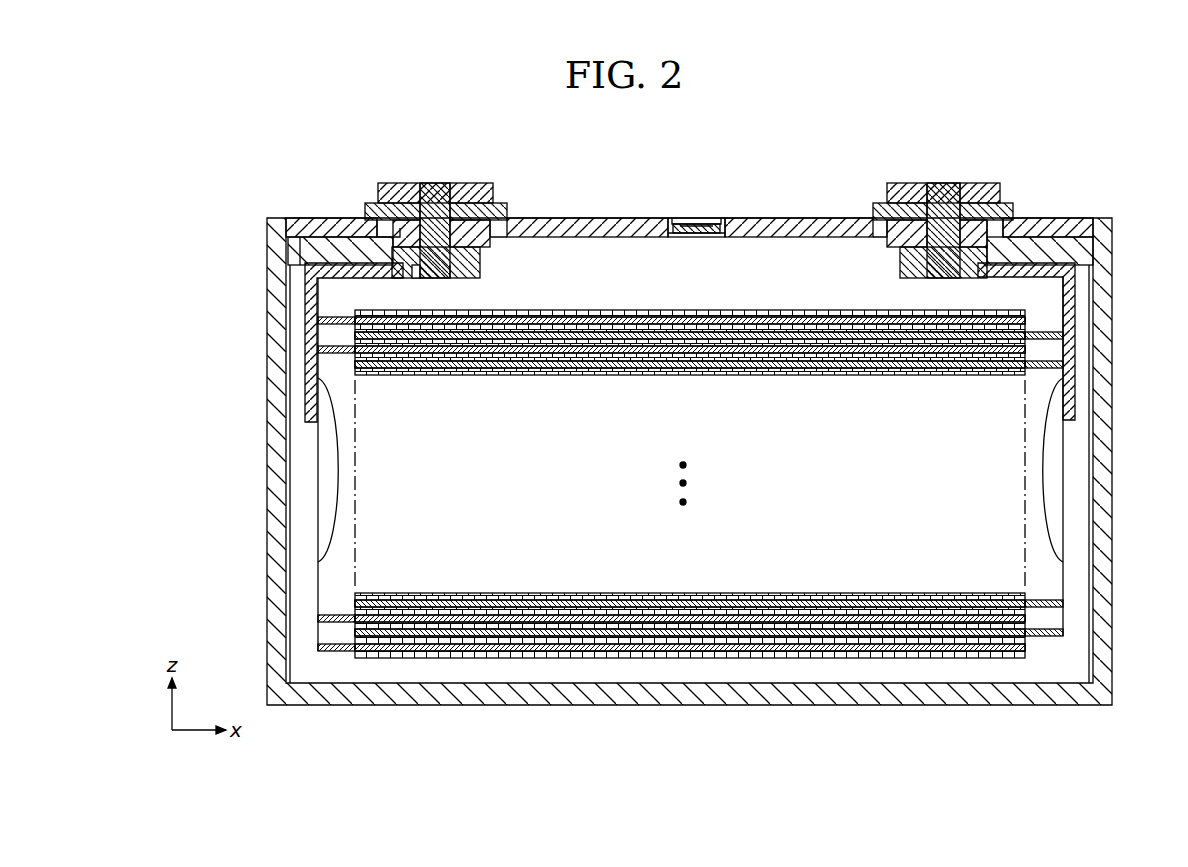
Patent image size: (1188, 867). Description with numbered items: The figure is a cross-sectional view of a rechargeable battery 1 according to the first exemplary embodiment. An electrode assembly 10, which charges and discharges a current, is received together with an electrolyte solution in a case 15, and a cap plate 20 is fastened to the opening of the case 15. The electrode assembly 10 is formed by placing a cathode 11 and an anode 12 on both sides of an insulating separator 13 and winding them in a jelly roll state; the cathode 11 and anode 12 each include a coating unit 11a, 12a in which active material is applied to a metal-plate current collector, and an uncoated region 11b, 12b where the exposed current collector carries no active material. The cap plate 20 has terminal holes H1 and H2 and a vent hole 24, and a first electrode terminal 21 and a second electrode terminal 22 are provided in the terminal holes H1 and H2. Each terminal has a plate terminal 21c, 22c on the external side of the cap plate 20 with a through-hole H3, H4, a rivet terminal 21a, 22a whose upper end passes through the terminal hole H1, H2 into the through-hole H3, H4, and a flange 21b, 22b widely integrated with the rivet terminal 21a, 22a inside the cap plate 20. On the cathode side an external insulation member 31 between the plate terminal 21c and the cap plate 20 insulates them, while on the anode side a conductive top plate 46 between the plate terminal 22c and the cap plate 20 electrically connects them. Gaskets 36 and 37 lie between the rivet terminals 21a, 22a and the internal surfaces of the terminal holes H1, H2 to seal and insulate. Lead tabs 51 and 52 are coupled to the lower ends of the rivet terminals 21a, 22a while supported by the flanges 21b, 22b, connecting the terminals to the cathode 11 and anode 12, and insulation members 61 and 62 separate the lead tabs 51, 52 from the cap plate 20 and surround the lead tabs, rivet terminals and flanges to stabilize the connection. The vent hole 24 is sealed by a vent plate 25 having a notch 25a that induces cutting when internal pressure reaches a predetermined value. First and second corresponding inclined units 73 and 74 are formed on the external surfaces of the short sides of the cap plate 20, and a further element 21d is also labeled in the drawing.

The rechargeable battery 1 is at (731, 106).
The electrode assembly 10 is at (690, 546).
The cathode 11 is at (385, 538).
The coating unit 11a is at (443, 652).
The uncoated region 11b is at (327, 518).
The anode 12 is at (986, 538).
The coating unit 12a is at (922, 635).
The uncoated region 12b is at (1047, 518).
The separator 13 is at (675, 656).
The case 15 is at (1103, 405).
The cap plate 20 is at (612, 230).
The first electrode terminal 21 is at (441, 184).
The rivet terminal 21a is at (436, 275).
The flange 21b is at (485, 252).
The plate terminal 21c is at (410, 195).
The first terminal protrusion 21d is at (408, 278).
The second electrode terminal 22 is at (938, 184).
The rivet terminal 22a is at (940, 278).
The flange 22b is at (905, 253).
The plate terminal 22c is at (980, 182).
The vent hole 24 is at (697, 240).
The vent plate 25 is at (720, 226).
The notch 25a is at (690, 225).
The external insulation member 31 is at (503, 205).
The gasket 36 is at (383, 212).
The gasket 37 is at (997, 207).
The conductive top plate 46 is at (880, 213).
The lead tab 51 is at (306, 306).
The lead tab 52 is at (1073, 300).
The insulation member 61 is at (292, 242).
The insulation member 62 is at (1075, 253).
The first corresponding inclined unit 73 is at (445, 275).
The second corresponding inclined unit 74 is at (312, 248).
The terminal hole H1 is at (462, 185).
The terminal hole H2 is at (917, 182).
The through-hole H3 is at (432, 183).
The through-hole H4 is at (948, 182).